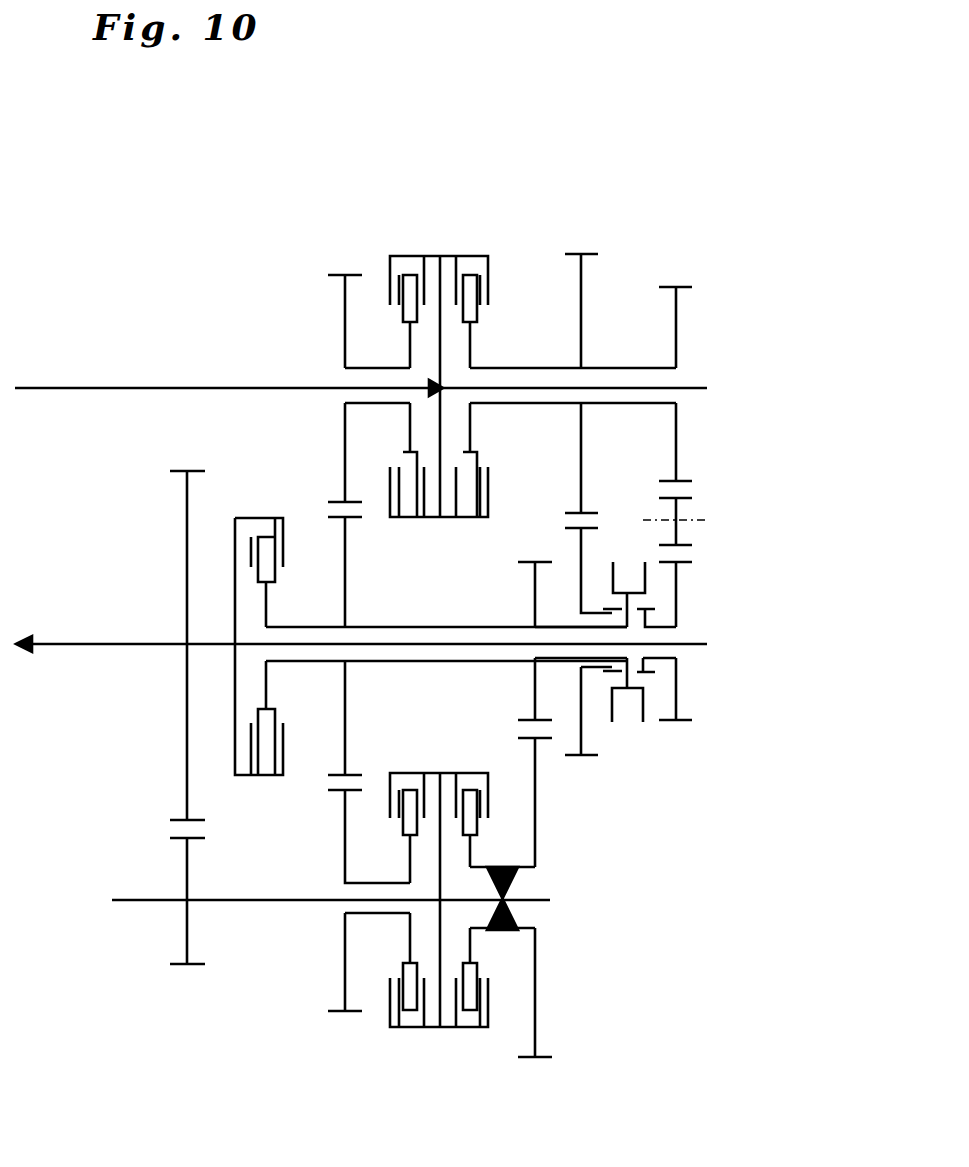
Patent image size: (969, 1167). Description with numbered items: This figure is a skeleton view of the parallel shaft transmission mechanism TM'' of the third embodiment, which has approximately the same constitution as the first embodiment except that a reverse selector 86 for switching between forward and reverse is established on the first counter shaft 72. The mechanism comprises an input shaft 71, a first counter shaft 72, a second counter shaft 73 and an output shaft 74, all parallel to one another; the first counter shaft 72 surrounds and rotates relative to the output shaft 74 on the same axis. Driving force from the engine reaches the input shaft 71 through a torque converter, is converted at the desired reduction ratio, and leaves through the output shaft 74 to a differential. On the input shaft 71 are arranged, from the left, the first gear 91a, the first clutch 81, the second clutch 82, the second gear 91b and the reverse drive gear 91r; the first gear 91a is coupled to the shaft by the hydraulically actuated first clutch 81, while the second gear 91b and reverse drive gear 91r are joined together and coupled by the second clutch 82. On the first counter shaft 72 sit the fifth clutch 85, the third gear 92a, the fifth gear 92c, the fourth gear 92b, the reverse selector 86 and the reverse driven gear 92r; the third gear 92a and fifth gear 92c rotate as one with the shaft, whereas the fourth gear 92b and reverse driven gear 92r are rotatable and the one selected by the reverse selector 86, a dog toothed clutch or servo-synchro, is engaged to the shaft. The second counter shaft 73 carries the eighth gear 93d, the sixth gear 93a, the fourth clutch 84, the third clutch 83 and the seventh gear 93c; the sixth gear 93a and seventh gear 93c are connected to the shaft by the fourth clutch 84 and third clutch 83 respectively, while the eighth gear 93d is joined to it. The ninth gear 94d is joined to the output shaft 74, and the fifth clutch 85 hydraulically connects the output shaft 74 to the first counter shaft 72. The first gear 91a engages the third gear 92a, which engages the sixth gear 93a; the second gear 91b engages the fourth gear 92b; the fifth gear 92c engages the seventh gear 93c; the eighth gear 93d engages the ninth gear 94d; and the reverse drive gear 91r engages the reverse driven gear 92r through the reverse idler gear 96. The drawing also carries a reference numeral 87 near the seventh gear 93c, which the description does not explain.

The parallel shaft transmission mechanism TM'' is at (616, 72).
The input shaft 71 is at (158, 388).
The first counter shaft 72 is at (452, 643).
The second counter shaft 73 is at (275, 900).
The output shaft 74 is at (90, 646).
The first clutch 81 is at (408, 256).
The second clutch 82 is at (455, 256).
The third clutch 83 is at (458, 1027).
The fourth clutch 84 is at (405, 1027).
The fifth clutch 85 is at (250, 518).
The reverse selector 86 is at (630, 693).
The gear 87 is at (518, 922).
The first gear 91a is at (342, 275).
The second gear 91b is at (578, 254).
The reverse drive gear 91r is at (685, 287).
The third gear 92a is at (360, 516).
The fourth gear 92b is at (588, 757).
The fifth gear 92c is at (530, 560).
The reverse driven gear 92r is at (683, 723).
The sixth gear 93a is at (333, 1011).
The seventh gear 93c is at (552, 1060).
The eighth gear 93d is at (185, 966).
The ninth gear 94d is at (185, 471).
The reverse idler gear 96 is at (690, 498).